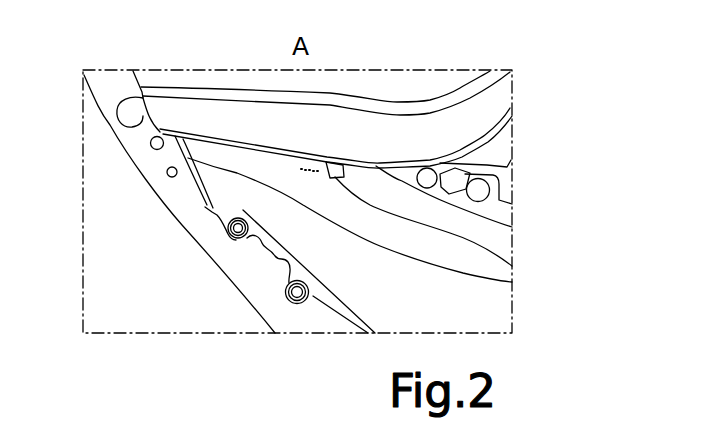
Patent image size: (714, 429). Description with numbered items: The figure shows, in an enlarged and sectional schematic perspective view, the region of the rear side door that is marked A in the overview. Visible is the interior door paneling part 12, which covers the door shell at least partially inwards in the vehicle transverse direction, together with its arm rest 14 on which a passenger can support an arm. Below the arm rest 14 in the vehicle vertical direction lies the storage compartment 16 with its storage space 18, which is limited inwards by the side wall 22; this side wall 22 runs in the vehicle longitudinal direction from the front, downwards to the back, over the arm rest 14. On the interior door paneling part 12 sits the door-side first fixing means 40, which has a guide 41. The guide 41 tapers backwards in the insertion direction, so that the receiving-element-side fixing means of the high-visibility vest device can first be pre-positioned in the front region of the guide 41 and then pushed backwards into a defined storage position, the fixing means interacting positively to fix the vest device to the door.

The interior door paneling part 12 is at (487, 298).
The arm rest 14 is at (490, 103).
The storage compartment 16 is at (311, 311).
The storage space 18 is at (493, 243).
The side wall 22 is at (498, 314).
The first fixing means 40 is at (361, 178).
The guide 41 is at (335, 167).